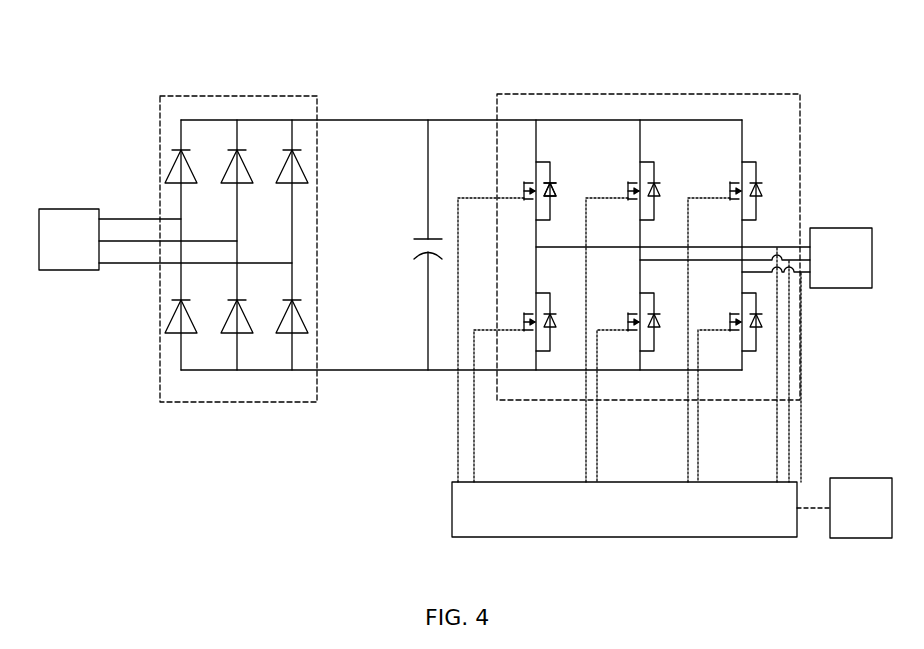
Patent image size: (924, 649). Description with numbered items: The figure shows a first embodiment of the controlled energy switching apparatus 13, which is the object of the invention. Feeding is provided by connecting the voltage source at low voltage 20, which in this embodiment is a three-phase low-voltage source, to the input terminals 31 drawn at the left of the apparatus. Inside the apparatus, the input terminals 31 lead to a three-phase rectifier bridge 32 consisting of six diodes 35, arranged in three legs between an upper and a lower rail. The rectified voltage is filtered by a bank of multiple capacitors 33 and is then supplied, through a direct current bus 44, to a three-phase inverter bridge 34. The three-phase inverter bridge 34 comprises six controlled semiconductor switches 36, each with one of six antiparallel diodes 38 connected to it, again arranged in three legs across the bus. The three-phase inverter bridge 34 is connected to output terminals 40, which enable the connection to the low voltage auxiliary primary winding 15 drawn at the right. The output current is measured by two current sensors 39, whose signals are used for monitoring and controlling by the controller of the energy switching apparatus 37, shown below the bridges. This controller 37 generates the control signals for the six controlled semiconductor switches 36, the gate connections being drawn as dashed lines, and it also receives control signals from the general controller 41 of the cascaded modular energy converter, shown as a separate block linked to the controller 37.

The controlled energy switching apparatus 13 is at (243, 40).
The low voltage auxiliary primary winding 15 is at (822, 228).
The voltage source at low voltage 20 is at (67, 209).
The input terminals 31 is at (108, 270).
The three-phase rectifier bridge 32 is at (160, 96).
The bank of multiple capacitors 33 is at (422, 236).
The three-phase inverter bridge 34 is at (497, 94).
The diodes 35 is at (165, 168).
The controlled semiconductor switches 36 is at (528, 178).
The controller of the energy switching apparatus 37 is at (452, 482).
The antiparallel diodes 38 is at (552, 198).
The current sensors 39 is at (778, 246).
The output terminals 40 is at (803, 278).
The general controller 41 is at (843, 478).
The direct current bus 44 is at (418, 118).